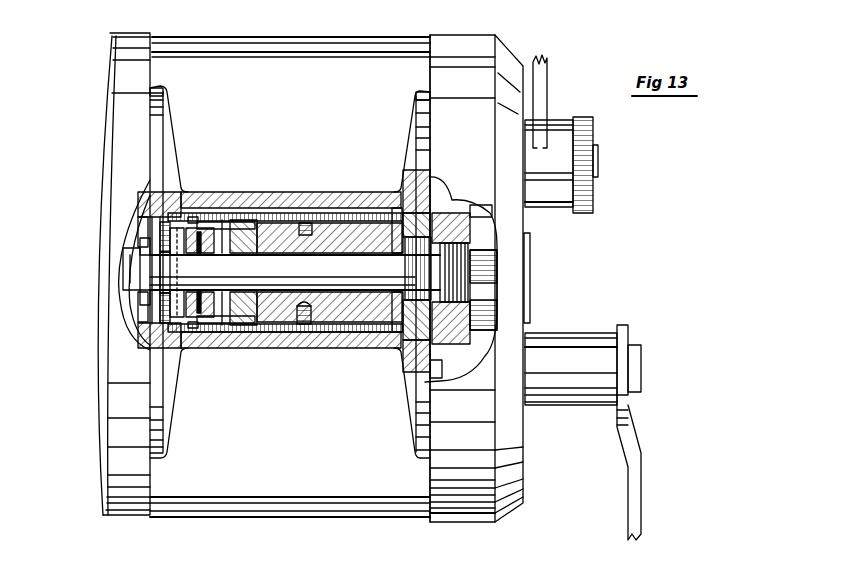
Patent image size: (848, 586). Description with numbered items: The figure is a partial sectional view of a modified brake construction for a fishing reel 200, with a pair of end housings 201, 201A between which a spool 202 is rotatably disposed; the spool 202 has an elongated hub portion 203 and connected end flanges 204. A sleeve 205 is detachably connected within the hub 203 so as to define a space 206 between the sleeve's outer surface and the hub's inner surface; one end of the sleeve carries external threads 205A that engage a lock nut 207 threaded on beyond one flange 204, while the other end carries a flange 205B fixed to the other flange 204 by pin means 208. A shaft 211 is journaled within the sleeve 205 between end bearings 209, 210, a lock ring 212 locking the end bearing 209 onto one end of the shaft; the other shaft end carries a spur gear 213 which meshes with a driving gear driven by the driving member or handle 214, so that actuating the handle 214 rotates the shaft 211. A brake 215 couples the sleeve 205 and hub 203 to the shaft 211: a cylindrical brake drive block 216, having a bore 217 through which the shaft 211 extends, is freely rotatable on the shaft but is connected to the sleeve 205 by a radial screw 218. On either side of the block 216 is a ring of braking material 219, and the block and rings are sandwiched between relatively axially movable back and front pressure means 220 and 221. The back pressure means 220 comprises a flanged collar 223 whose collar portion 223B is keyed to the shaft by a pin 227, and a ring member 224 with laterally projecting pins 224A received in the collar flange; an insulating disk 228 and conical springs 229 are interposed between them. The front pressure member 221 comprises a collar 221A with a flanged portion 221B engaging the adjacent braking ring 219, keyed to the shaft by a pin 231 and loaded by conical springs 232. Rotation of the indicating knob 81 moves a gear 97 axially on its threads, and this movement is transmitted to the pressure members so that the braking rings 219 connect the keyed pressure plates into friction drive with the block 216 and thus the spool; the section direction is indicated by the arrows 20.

The fishing reel 200 is at (570, 244).
The end housing 201 is at (483, 58).
The end housing 201A is at (132, 120).
The spool 202 is at (184, 128).
The hub portion 203 is at (355, 214).
The end flange 204 is at (168, 110).
The sleeve 205 is at (274, 345).
The external threads 205A is at (142, 325).
The flange 205B is at (520, 378).
The space 206 is at (334, 347).
The lock nut 207 is at (150, 355).
The pin means 208 is at (428, 176).
The end bearing 209 is at (148, 236).
The end bearing 210 is at (442, 210).
The shaft 211 is at (300, 277).
The lock ring 212 is at (135, 279).
The spur gear 213 is at (497, 272).
The driving member 214 is at (644, 460).
The brake 215 is at (279, 196).
The brake drive block 216 is at (322, 200).
The bore 217 is at (325, 255).
The screw 218 is at (305, 203).
The ring of braking material 219 is at (243, 340).
The back pressure means 220 is at (222, 330).
The front pressure member 221 is at (396, 352).
The collar 221A is at (386, 192).
The flanged portion 221B is at (368, 352).
The flanged collar 223 is at (165, 385).
The collar portion 223B is at (145, 258).
The ring member 224 is at (232, 192).
The laterally projecting pins 224A is at (192, 192).
The pin 227 is at (177, 269).
The insulating disk 228 is at (214, 200).
The conical springs 229 is at (199, 330).
The pin 231 is at (394, 200).
The conical springs 232 is at (448, 214).
The indicating knob 81 is at (548, 94).
The gear 97 is at (478, 212).
The section direction arrow 20 is at (305, 180).